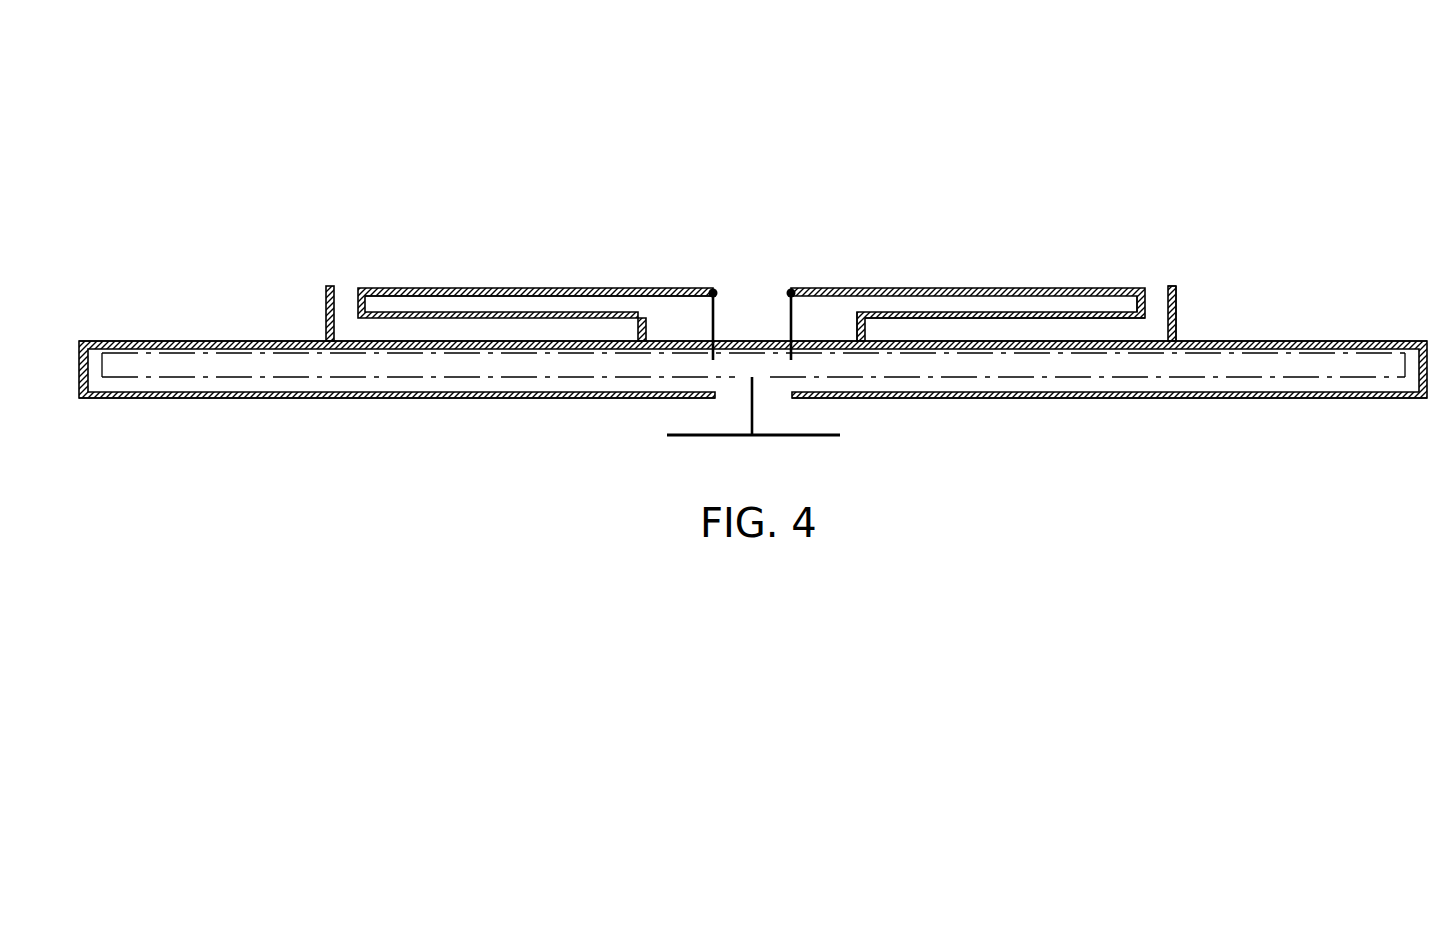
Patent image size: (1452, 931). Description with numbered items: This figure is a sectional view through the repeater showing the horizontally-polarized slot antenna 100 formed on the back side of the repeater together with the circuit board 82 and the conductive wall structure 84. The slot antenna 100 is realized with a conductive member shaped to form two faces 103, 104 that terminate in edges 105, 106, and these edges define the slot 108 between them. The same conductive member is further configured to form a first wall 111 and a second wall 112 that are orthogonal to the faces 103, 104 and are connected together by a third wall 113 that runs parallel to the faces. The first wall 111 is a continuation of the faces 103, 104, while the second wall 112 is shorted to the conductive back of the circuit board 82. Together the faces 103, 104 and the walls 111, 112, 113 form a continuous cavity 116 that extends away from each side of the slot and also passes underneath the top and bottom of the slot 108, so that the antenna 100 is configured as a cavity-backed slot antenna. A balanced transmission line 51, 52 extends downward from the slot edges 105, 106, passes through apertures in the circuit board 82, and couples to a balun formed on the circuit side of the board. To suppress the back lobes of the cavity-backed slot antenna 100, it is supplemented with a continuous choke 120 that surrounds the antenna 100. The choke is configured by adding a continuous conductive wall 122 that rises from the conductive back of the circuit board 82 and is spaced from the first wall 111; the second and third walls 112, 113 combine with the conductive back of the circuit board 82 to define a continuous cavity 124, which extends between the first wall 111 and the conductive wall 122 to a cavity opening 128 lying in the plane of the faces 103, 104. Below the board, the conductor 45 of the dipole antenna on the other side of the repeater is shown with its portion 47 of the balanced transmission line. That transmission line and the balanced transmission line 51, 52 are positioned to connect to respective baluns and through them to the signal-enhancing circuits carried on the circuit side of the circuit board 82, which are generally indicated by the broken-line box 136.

The slot antenna 100 is at (866, 158).
The face 103 is at (427, 288).
The face 104 is at (995, 288).
The edge 105 is at (713, 293).
The edge 106 is at (791, 293).
The slot 108 is at (752, 290).
The first wall 111 is at (1107, 300).
The second wall 112 is at (857, 325).
The third wall 113 is at (1037, 318).
The continuous cavity 116 is at (525, 302).
The continuous choke 120 is at (1176, 232).
The continuous conductive wall 122 is at (1177, 308).
The continuous cavity 124 is at (1095, 328).
The cavity opening 128 is at (1158, 283).
The broken-line box 136 is at (550, 377).
The circuit board 82 is at (1380, 340).
The conductive wall structure 84 is at (1380, 402).
The balanced transmission line conductor 51 is at (707, 318).
The balanced transmission line conductor 52 is at (795, 318).
The balanced transmission line portion 47 is at (758, 400).
The conductor 45 is at (813, 440).